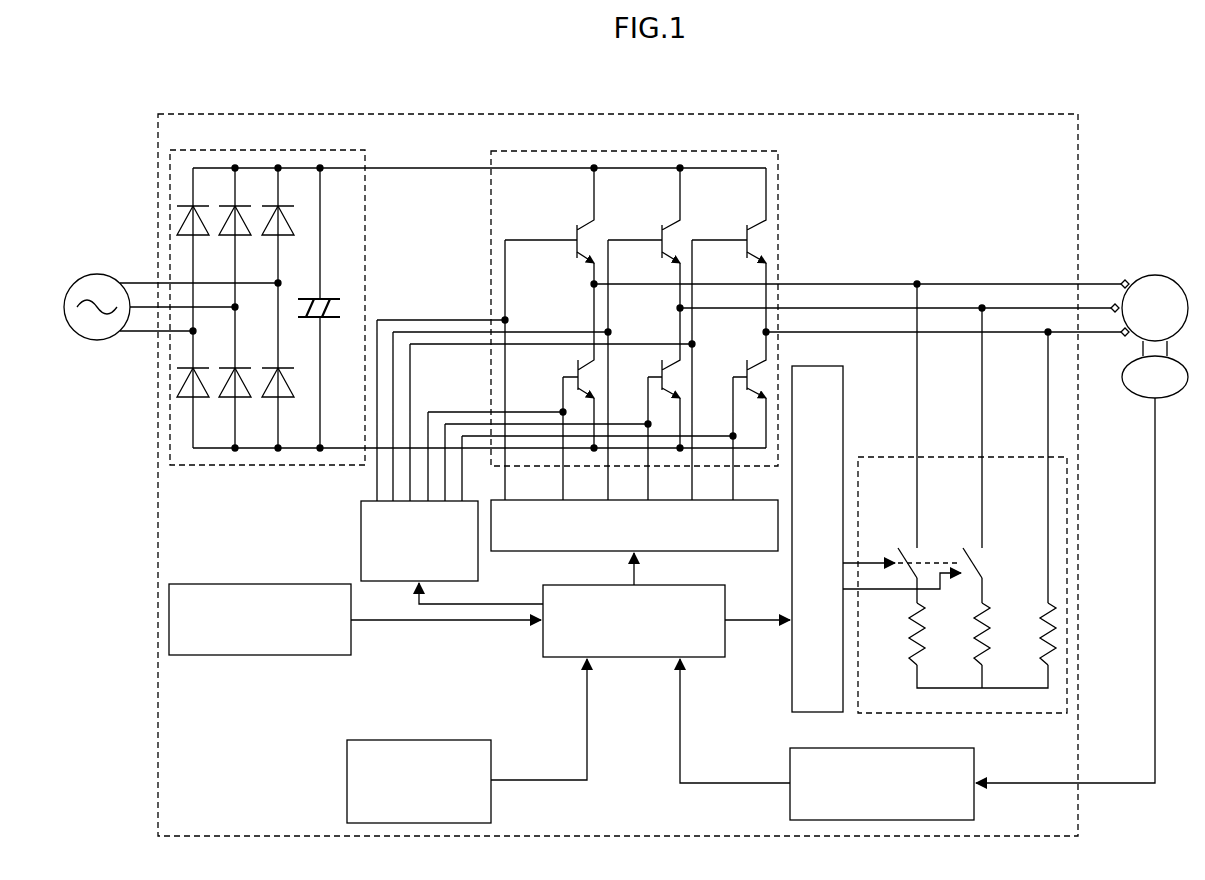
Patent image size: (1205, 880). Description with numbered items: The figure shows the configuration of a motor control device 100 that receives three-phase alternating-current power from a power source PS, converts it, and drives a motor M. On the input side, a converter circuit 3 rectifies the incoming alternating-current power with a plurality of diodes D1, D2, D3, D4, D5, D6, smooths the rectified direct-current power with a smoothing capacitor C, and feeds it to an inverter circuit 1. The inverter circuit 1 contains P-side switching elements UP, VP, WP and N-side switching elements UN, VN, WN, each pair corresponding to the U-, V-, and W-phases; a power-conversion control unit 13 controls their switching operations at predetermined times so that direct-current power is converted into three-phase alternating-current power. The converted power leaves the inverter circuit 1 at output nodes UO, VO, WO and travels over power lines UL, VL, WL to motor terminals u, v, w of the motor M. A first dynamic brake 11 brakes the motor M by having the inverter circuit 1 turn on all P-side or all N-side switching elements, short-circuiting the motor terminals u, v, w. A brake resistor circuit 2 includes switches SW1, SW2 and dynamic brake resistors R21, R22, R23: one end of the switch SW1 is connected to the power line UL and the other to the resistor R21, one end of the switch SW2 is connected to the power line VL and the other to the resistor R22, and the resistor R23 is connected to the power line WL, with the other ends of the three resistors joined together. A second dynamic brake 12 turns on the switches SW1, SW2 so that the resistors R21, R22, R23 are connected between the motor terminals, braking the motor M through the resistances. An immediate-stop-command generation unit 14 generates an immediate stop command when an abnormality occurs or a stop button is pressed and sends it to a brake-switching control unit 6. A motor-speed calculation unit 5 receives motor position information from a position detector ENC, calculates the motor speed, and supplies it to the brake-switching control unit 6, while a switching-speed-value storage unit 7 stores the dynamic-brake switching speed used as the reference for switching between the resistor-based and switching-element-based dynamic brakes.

The motor control device 100 is at (868, 109).
The inverter circuit 1 is at (634, 297).
The brake resistor circuit 2 is at (962, 498).
The converter circuit 3 is at (468, 296).
The motor-speed calculation unit 5 is at (936, 742).
The brake-switching control unit 6 is at (669, 582).
The switching-speed-value storage unit 7 is at (194, 581).
The first dynamic brake 11 is at (513, 553).
The second dynamic brake 12 is at (820, 361).
The power-conversion control unit 13 is at (361, 534).
The immediate-stop-command generation unit 14 is at (454, 737).
The power source PS is at (96, 274).
The motor M is at (1153, 275).
The position detector ENC is at (1138, 400).
The smoothing capacitor C is at (328, 286).
The diode D1 is at (200, 233).
The diode D2 is at (200, 395).
The diode D3 is at (242, 233).
The diode D4 is at (242, 395).
The diode D5 is at (285, 233).
The diode D6 is at (285, 395).
The P-side switching element UP is at (564, 230).
The P-side switching element VP is at (658, 216).
The P-side switching element WP is at (742, 216).
The N-side switching element UN is at (579, 347).
The N-side switching element VN is at (652, 347).
The N-side switching element WN is at (738, 358).
The output node UO is at (578, 282).
The output node VO is at (666, 294).
The output node WO is at (754, 308).
The power line UL is at (998, 266).
The power line VL is at (1037, 296).
The power line WL is at (1017, 352).
The motor terminal u is at (1112, 276).
The motor terminal v is at (1107, 300).
The motor terminal w is at (1111, 324).
The switch SW1 is at (901, 538).
The switch SW2 is at (966, 538).
The dynamic brake resistor R21 is at (898, 634).
The dynamic brake resistor R22 is at (962, 634).
The dynamic brake resistor R23 is at (1029, 634).